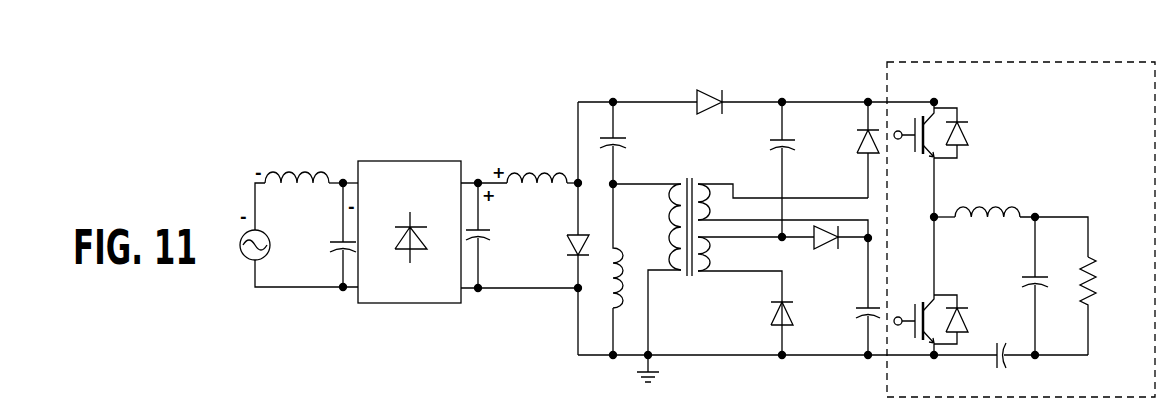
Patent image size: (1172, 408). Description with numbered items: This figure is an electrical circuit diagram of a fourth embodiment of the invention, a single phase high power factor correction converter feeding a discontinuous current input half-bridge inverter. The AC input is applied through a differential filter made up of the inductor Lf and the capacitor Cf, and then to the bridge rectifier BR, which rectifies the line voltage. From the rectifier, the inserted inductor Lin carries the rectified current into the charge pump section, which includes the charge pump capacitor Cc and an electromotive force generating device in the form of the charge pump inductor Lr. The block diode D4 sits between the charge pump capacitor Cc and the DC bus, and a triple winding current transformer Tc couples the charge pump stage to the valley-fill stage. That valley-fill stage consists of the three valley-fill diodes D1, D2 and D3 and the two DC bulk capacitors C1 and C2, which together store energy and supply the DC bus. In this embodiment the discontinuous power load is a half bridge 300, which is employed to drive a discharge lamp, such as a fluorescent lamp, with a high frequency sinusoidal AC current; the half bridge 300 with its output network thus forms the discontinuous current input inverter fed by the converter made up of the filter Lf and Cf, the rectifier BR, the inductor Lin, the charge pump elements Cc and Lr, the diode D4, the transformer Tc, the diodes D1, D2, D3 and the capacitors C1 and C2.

The half bridge 300 is at (1003, 62).
The inductor Lf is at (297, 161).
The capacitor Cf is at (327, 235).
The bridge rectifier BR is at (412, 303).
The inserted inductor Lin is at (537, 161).
The charge pump inductor Lr is at (607, 269).
The charge pump capacitor Cc is at (627, 142).
The triple winding current transformer Tc is at (690, 209).
The DC bulk capacitor C1 is at (766, 169).
The DC bulk capacitor C2 is at (852, 296).
The valley-fill diode D1 is at (764, 318).
The valley-fill diode D2 is at (850, 150).
The valley-fill diode D3 is at (829, 257).
The block diode D4 is at (712, 88).